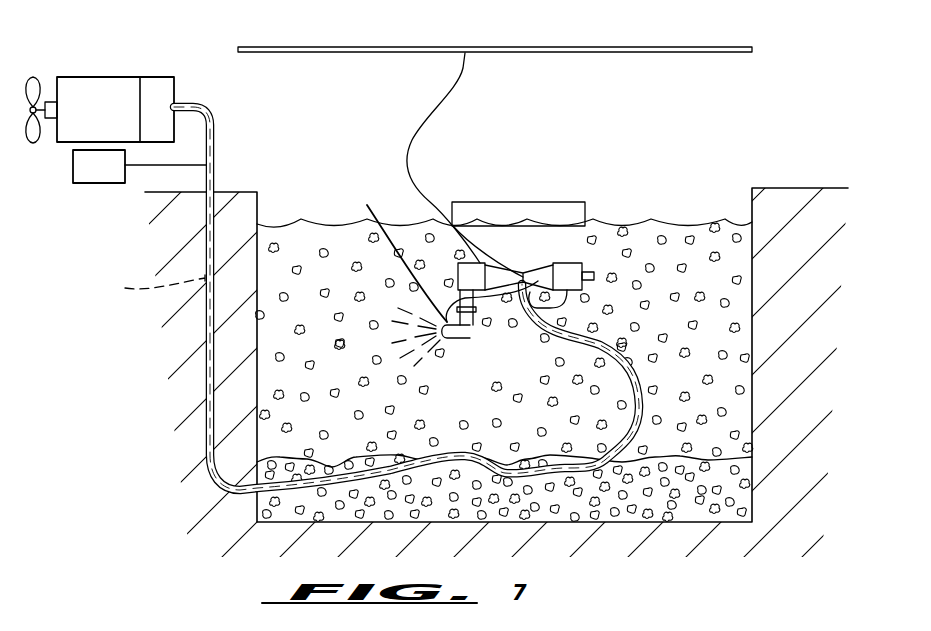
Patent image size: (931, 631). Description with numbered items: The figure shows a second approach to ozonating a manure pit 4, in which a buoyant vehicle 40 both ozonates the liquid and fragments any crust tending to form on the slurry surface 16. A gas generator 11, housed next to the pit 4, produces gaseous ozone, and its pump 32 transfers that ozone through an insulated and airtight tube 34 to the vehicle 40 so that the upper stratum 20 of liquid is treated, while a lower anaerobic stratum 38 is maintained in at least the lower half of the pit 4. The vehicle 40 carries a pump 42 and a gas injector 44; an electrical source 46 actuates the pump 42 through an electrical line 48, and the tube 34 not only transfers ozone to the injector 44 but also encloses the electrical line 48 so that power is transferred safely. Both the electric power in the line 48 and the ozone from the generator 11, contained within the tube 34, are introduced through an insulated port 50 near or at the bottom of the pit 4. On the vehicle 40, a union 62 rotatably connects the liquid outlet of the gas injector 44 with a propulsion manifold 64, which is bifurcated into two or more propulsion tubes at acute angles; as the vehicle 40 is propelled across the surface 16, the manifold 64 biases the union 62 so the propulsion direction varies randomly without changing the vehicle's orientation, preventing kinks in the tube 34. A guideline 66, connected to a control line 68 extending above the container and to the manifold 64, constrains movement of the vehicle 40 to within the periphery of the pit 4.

The manure pit 4 is at (257, 430).
The gas generator 11 is at (160, 87).
The surface 16 is at (682, 222).
The upper stratum 20 is at (345, 245).
The pump 32 is at (88, 88).
The insulated and airtight tube 34 is at (217, 132).
The lower anaerobic stratum 38 is at (683, 496).
The buoyant vehicle 40 is at (495, 198).
The pump 42 is at (573, 265).
The gas injector 44 is at (538, 263).
The electrical source 46 is at (88, 178).
The electrical line 48 is at (157, 167).
The insulated port 50 is at (262, 497).
The union 62 is at (477, 312).
The propulsion manifold 64 is at (472, 340).
The guideline 66 is at (412, 188).
The control line 68 is at (553, 52).